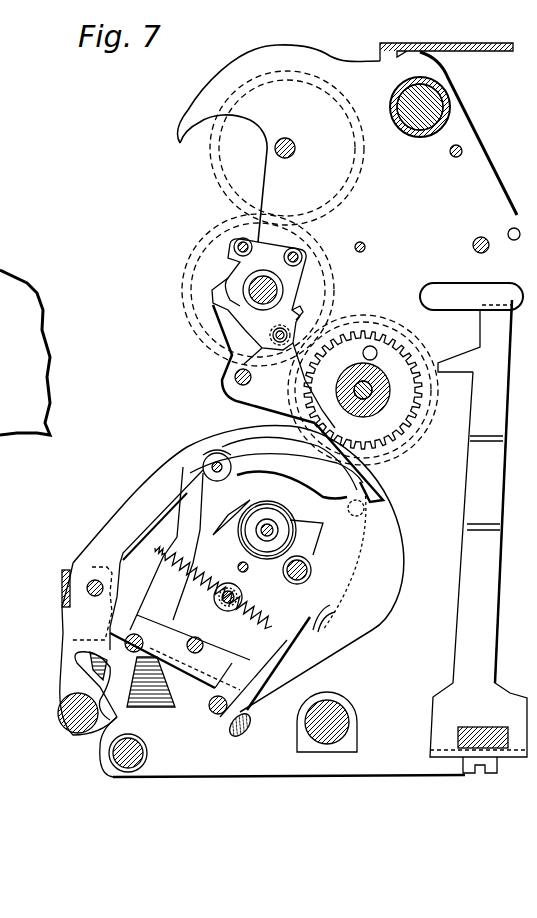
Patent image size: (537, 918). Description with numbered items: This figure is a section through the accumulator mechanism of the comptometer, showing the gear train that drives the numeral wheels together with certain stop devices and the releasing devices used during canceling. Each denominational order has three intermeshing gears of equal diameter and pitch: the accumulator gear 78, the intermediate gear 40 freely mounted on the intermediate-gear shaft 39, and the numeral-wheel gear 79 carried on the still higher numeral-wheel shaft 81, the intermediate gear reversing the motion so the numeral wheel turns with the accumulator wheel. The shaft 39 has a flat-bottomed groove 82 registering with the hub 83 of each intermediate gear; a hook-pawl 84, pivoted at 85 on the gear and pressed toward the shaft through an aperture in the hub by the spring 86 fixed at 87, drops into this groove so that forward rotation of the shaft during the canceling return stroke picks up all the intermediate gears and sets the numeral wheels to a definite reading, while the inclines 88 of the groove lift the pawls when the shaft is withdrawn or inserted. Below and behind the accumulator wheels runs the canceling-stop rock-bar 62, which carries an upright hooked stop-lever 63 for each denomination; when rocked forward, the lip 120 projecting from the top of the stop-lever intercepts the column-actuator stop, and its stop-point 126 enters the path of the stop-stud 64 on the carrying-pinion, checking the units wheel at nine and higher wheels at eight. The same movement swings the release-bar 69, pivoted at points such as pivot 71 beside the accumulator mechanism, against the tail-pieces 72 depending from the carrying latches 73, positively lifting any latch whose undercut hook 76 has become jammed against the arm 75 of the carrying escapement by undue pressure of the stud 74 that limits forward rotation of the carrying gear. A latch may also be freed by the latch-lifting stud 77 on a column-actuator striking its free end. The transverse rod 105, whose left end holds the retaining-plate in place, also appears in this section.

The intermediate-gear shaft 39 is at (258, 287).
The intermediate gear 40 is at (190, 250).
The canceling-stop rock-bar 62 is at (466, 734).
The hooked stop-lever 63 is at (463, 600).
The stop-stud 64 is at (372, 347).
The swinging release-bar 69 is at (60, 723).
The pivot point 71 is at (86, 582).
The tail-piece 72 is at (107, 720).
The carrying-mechanism latch 73 is at (176, 590).
The stud 74 is at (290, 571).
The arm of the carrying escapement 75 is at (310, 560).
The undercut hook 76 is at (231, 478).
The latch-lifting stud 77 is at (356, 517).
The accumulator gear 78 is at (347, 310).
The numeral-wheel gear 79 is at (210, 168).
The numeral-wheel shaft 81 is at (286, 138).
The groove 82 is at (299, 268).
The hub 83 is at (253, 312).
The hook-pawl 84 is at (243, 311).
The pivot 85 is at (281, 344).
The spring 86 is at (298, 296).
The fixing point 87 is at (236, 240).
The incline 88 is at (248, 283).
The rod 105 is at (240, 383).
The lip 120 is at (481, 300).
The stop-point 126 is at (463, 366).